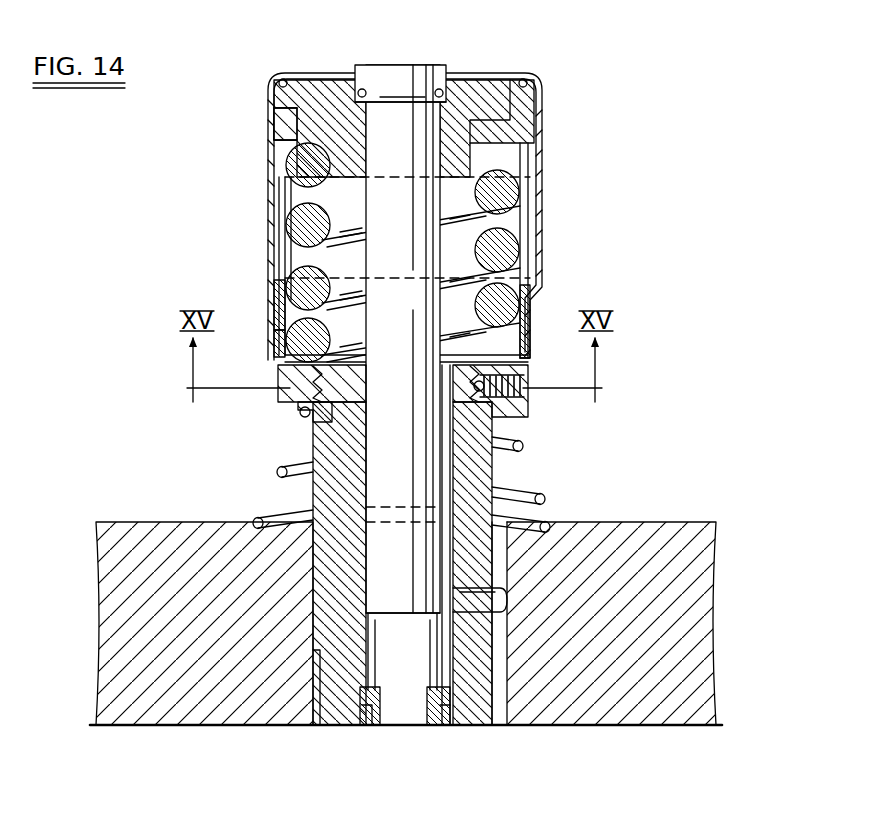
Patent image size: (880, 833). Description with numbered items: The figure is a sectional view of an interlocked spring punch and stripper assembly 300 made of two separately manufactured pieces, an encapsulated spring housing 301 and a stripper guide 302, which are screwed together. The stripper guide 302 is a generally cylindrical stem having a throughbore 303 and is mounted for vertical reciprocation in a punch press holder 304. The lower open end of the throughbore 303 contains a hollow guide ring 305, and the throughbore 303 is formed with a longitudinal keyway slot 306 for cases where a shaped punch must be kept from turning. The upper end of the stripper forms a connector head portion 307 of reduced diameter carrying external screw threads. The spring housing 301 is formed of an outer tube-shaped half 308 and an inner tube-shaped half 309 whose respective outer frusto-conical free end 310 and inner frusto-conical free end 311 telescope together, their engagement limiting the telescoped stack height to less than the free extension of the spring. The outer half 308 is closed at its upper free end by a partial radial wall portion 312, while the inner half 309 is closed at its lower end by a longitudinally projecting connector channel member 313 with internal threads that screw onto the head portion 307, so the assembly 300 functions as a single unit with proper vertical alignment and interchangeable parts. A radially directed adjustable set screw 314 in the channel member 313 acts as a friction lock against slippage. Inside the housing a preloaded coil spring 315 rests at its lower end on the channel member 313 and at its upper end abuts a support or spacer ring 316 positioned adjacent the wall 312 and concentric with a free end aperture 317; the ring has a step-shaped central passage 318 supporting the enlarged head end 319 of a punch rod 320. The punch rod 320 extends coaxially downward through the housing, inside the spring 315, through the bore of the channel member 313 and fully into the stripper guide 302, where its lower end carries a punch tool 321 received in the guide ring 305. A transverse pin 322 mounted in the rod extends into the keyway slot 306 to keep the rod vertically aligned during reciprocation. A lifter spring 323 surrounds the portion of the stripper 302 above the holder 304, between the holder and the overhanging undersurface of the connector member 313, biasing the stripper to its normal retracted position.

The interlocked spring punch and stripper assembly 300 is at (548, 297).
The encapsulated spring housing 301 is at (268, 218).
The stripper guide 302 is at (312, 487).
The throughbore 303 is at (353, 442).
The punch press holder 304 is at (720, 545).
The hollow guide ring 305 is at (373, 727).
The longitudinal keyway slot 306 is at (447, 465).
The connector head portion 307 is at (320, 400).
The outer tube-shaped housing half 308 is at (541, 205).
The inner tube-shaped housing half 309 is at (279, 355).
The outer frusto-conical open free end 310 is at (278, 305).
The inner frusto-conical open free end 311 is at (279, 284).
The partial radial wall portion 312 is at (290, 74).
The connector channel member 313 is at (290, 378).
The adjustable set screw 314 is at (528, 387).
The coil spring 315 is at (510, 252).
The support or spacer ring 316 is at (523, 110).
The free end aperture 317 is at (516, 76).
The step-shaped central passage 318 is at (288, 113).
The head end 319 is at (336, 82).
The punch rod 320 is at (410, 243).
The punch tool 321 is at (410, 700).
The transverse pin 322 is at (418, 532).
The lifter spring 323 is at (533, 491).